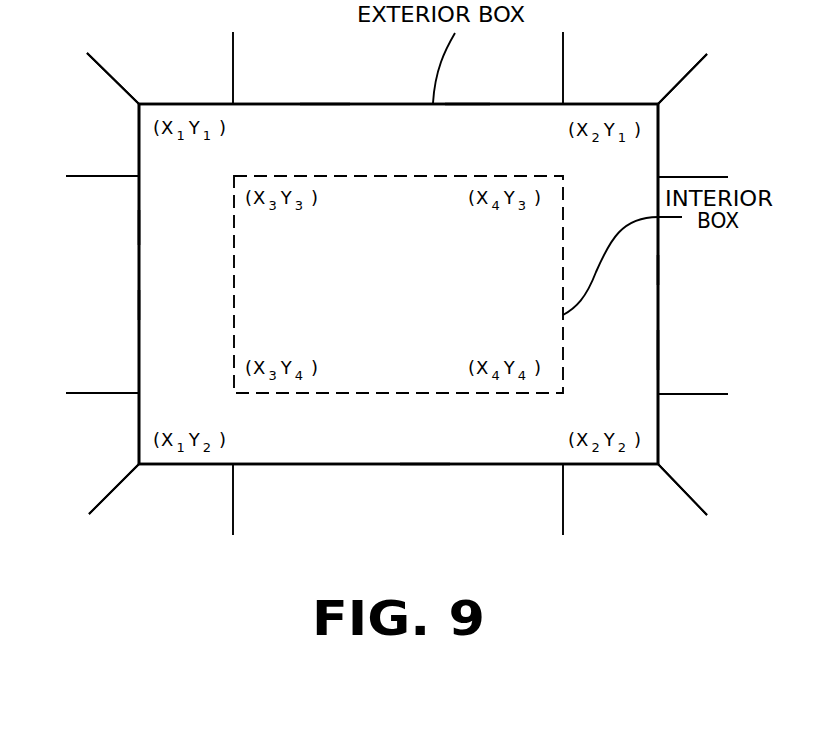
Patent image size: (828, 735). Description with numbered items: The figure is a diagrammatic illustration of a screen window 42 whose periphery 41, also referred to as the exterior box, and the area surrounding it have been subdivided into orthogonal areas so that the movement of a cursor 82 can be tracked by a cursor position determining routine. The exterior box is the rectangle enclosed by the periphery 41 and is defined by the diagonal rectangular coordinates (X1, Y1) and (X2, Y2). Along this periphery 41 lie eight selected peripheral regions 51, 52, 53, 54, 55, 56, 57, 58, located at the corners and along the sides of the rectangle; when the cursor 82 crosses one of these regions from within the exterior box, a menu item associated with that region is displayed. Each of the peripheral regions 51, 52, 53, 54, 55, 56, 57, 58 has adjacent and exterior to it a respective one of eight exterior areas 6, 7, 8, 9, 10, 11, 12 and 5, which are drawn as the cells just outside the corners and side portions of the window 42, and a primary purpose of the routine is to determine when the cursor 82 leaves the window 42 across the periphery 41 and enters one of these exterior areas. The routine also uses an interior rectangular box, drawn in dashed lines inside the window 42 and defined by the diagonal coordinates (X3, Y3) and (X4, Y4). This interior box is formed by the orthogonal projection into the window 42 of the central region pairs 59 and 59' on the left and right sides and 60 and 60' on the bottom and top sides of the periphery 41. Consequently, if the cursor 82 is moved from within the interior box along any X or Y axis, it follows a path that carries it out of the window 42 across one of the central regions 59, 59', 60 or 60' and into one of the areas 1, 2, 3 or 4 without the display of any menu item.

The area 1 is at (391, 81).
The area 2 is at (687, 301).
The area 3 is at (392, 513).
The area 4 is at (97, 298).
The exterior area 5 is at (181, 83).
The exterior area 6 is at (604, 84).
The exterior area 7 is at (687, 156).
The exterior area 8 is at (686, 443).
The exterior area 9 is at (604, 514).
The exterior area 10 is at (178, 510).
The exterior area 11 is at (95, 442).
The exterior area 12 is at (94, 152).
The periphery 41 is at (325, 103).
The window 42 is at (612, 350).
The peripheral region 51 is at (637, 105).
The peripheral region 52 is at (658, 155).
The peripheral region 53 is at (657, 420).
The peripheral region 54 is at (640, 464).
The peripheral region 55 is at (162, 463).
The peripheral region 56 is at (139, 418).
The peripheral region 57 is at (139, 153).
The peripheral region 58 is at (163, 102).
The central region 59 is at (169, 295).
The central region 59' is at (685, 259).
The central region 60 is at (403, 444).
The central region 60' is at (480, 80).
The cursor 82 is at (195, 251).